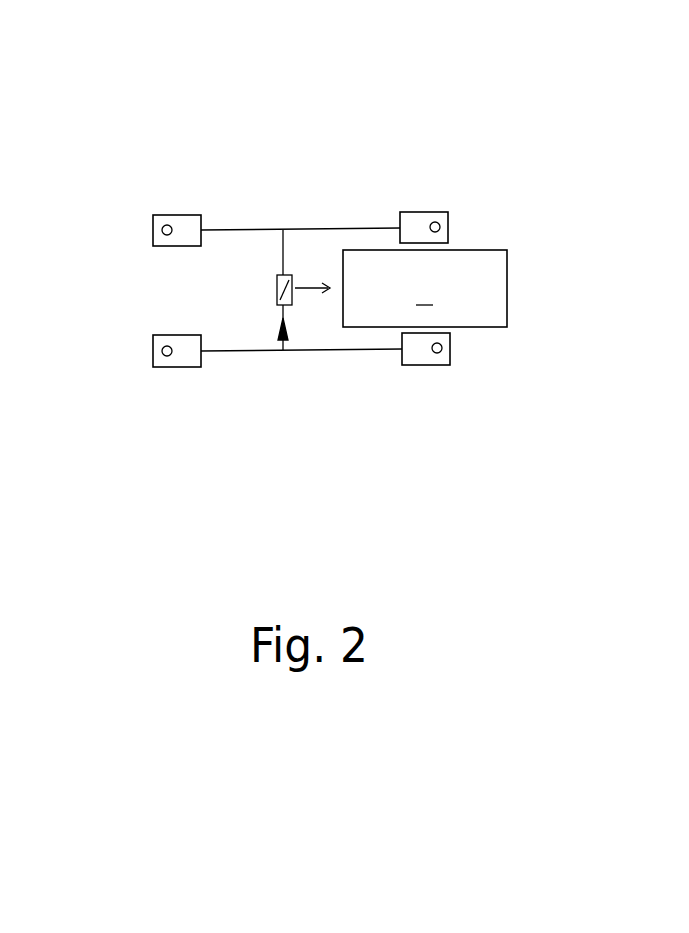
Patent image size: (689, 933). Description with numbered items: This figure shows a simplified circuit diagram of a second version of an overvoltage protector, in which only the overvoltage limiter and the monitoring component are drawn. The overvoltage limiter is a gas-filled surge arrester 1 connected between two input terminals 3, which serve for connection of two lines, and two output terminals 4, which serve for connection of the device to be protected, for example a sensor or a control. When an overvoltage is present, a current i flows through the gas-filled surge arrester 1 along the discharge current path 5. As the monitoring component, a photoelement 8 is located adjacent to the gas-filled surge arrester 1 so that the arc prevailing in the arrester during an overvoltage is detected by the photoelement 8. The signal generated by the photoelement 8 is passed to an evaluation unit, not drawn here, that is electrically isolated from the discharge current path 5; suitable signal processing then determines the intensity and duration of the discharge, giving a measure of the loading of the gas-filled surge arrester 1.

The gas-filled surge arrester 1 is at (277, 302).
The input terminals 3 is at (168, 215).
The output terminals 4 is at (440, 224).
The discharge current path 5 is at (245, 182).
The photoelement 8 is at (425, 288).